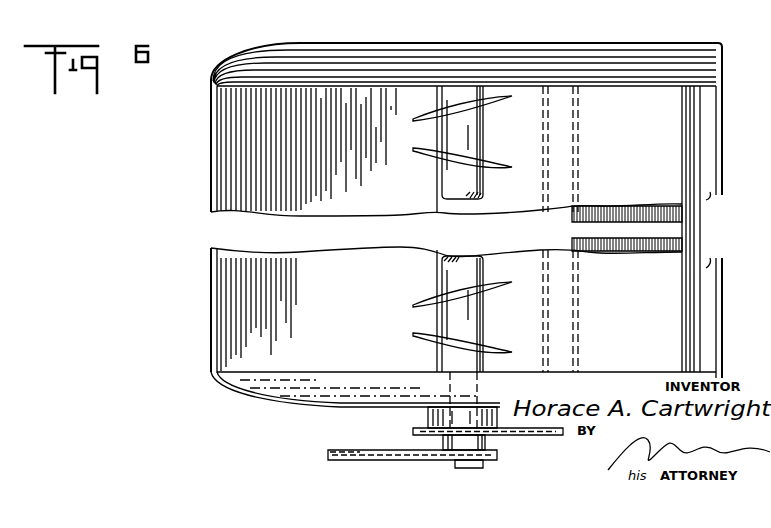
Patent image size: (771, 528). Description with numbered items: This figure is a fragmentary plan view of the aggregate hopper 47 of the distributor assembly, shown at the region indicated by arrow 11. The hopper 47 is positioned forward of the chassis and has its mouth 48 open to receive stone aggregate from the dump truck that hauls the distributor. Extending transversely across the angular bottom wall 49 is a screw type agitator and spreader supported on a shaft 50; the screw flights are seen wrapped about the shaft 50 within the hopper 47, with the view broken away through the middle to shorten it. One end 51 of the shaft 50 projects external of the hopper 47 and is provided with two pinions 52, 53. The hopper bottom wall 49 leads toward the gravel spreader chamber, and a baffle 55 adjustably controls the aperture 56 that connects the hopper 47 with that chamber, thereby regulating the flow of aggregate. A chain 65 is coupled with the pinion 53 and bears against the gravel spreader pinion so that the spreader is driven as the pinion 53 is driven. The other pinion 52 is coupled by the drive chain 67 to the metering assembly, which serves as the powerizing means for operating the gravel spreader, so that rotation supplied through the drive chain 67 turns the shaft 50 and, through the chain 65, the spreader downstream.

The feeder assembly 11 is at (188, 47).
The aggregate hopper 47 is at (328, 325).
The mouth 48 is at (281, 62).
The angular bottom wall 49 is at (325, 262).
The shaft 50 is at (455, 275).
The end of shaft 51 is at (466, 468).
The pinion 52 is at (436, 442).
The pinion 53 is at (440, 420).
The baffle 55 is at (572, 240).
The aperture 56 is at (710, 268).
The chain 65 is at (536, 437).
The drive chain 67 is at (370, 462).